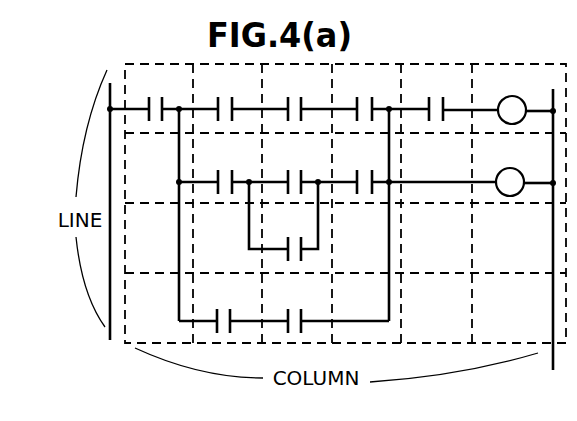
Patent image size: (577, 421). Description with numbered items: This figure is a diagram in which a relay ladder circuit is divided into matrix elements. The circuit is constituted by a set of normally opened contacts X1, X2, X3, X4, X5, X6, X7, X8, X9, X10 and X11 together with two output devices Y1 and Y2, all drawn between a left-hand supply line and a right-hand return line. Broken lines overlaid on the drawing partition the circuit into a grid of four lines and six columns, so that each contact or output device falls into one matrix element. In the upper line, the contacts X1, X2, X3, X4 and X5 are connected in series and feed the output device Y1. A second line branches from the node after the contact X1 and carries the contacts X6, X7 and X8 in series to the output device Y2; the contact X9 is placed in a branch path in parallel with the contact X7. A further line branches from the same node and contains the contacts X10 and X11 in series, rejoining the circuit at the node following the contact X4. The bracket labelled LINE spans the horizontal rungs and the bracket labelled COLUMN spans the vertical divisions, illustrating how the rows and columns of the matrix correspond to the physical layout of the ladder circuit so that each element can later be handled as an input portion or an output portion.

The normally opened contact X1 is at (155, 97).
The normally opened contact X2 is at (226, 97).
The normally opened contact X3 is at (295, 97).
The normally opened contact X4 is at (365, 97).
The normally opened contact X5 is at (436, 97).
The normally opened contact X6 is at (226, 170).
The normally opened contact X7 is at (295, 170).
The normally opened contact X8 is at (365, 170).
The normally opened contact X9 is at (295, 237).
The normally opened contact X10 is at (223, 309).
The normally opened contact X11 is at (294, 309).
The output device Y1 is at (512, 110).
The output device Y2 is at (510, 182).